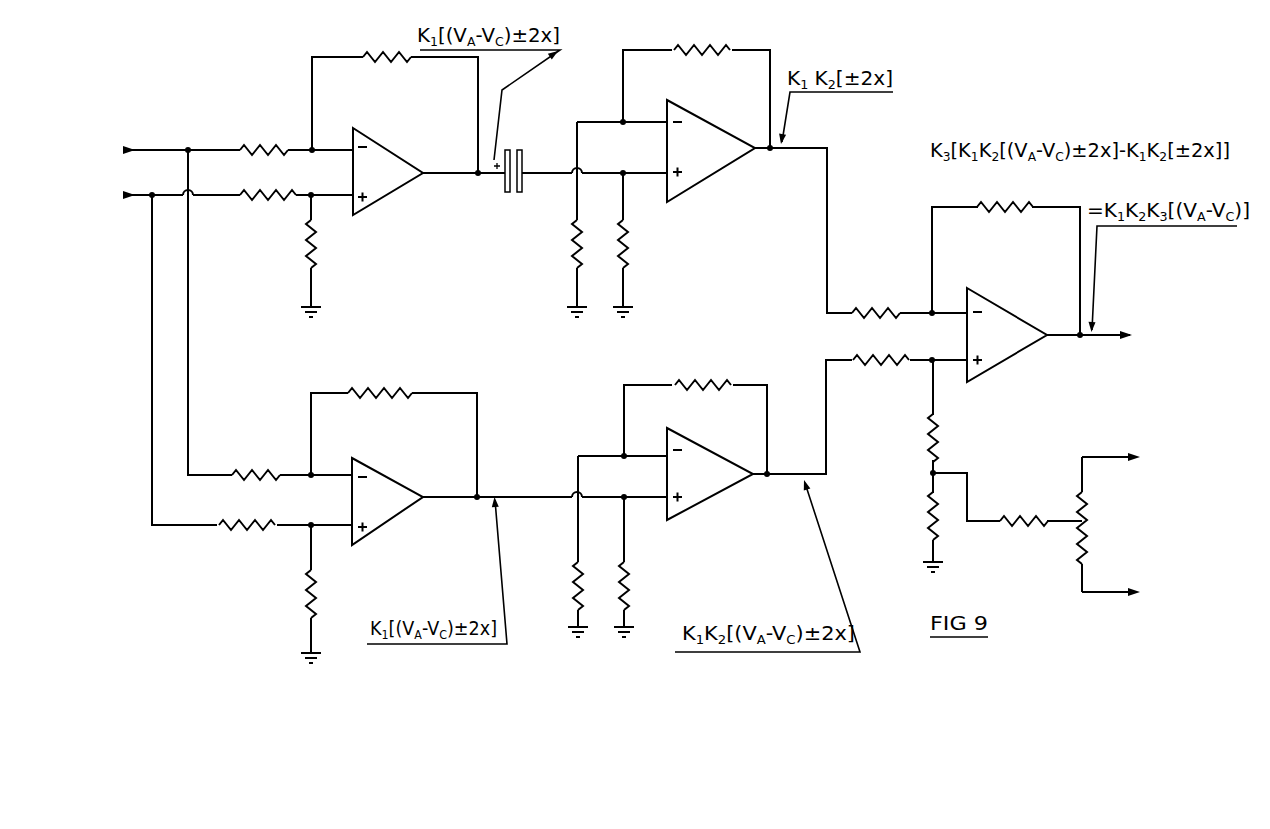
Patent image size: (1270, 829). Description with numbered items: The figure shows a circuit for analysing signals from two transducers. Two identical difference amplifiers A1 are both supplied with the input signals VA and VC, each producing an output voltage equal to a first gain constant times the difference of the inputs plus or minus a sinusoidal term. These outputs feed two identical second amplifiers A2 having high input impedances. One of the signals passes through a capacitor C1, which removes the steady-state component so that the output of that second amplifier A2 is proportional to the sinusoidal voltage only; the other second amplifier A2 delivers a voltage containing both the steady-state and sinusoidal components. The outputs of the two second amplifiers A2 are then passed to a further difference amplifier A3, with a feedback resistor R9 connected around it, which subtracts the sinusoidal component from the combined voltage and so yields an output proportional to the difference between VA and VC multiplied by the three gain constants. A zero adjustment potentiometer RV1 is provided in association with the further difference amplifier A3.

The difference amplifier A1 is at (387, 336).
The second amplifier A2 is at (711, 310).
The further difference amplifier A3 is at (1007, 335).
The capacitor C1 is at (580, 158).
The feedback resistor R9 is at (1006, 259).
The zero adjustment potentiometer RV1 is at (1108, 523).
The input signal VA is at (237, 300).
The input signal VC is at (237, 360).